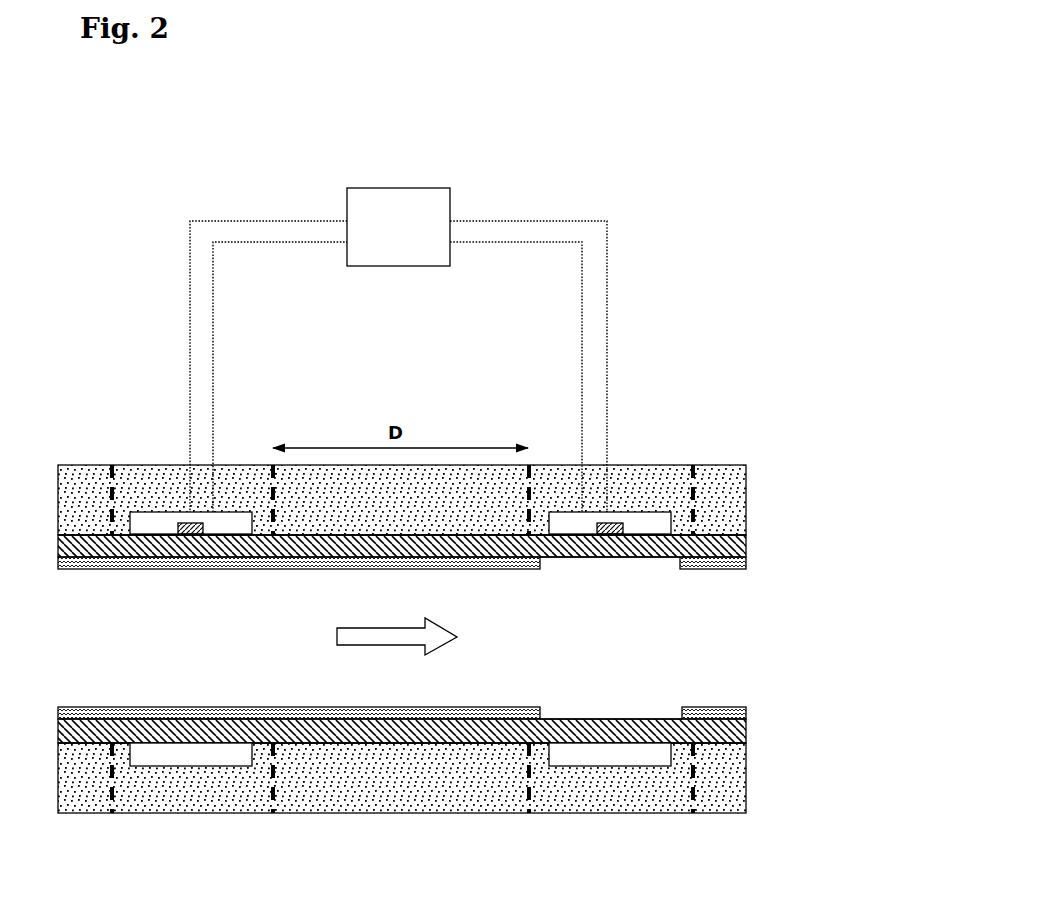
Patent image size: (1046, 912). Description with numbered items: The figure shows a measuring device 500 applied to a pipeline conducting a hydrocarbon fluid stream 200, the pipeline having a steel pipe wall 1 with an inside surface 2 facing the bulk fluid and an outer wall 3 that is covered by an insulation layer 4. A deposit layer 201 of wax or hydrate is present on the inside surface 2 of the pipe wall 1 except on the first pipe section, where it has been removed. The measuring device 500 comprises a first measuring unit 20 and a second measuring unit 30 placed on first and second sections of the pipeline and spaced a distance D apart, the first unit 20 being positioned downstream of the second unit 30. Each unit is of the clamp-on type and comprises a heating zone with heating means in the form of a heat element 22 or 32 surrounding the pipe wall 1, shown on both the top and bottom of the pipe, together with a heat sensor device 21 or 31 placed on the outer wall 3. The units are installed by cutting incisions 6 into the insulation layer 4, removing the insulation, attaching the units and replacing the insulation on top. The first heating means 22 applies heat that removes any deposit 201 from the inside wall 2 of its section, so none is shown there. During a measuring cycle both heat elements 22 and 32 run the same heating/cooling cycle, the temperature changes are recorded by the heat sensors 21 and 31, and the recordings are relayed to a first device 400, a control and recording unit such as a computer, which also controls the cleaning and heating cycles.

The measuring device 500 is at (406, 486).
The first device 400 is at (417, 246).
The hydrocarbon fluid stream 200 is at (291, 647).
The second measuring unit 30 is at (196, 556).
The heat sensor device 31 is at (129, 449).
The heat element 32 is at (148, 649).
The first measuring unit 20 is at (609, 555).
The heat sensor device 21 is at (672, 438).
The heat element 22 is at (658, 639).
The insulation layer 4 is at (447, 657).
The outer wall 3 is at (448, 644).
The pipe wall 1 is at (448, 645).
The deposit layer 201 is at (447, 641).
The inside surface 2 is at (608, 700).
The incisions 6 is at (457, 663).